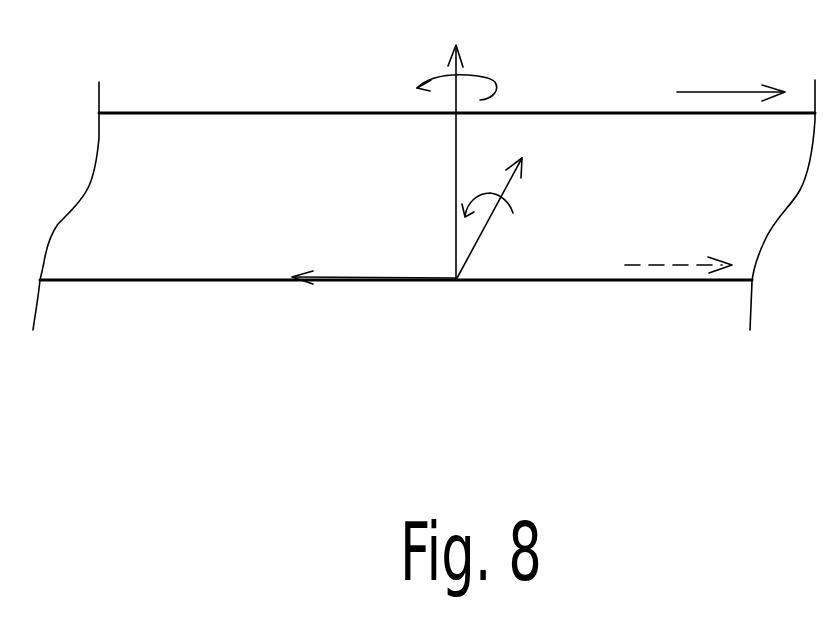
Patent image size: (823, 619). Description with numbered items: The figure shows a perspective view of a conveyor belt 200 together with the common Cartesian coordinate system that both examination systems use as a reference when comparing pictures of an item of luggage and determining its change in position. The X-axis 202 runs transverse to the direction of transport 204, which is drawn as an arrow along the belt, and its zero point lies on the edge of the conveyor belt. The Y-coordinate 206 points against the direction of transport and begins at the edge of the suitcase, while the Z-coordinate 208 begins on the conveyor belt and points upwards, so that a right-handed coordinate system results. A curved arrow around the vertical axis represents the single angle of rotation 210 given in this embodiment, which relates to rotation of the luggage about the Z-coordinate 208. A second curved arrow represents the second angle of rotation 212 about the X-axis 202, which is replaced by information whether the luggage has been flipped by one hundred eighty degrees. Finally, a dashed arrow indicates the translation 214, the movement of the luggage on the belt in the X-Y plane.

The conveyor belt 200 is at (115, 282).
The X-axis 202 is at (477, 249).
The direction of transport 204 is at (737, 90).
The Y-coordinate 206 is at (437, 277).
The Z-coordinate 208 is at (455, 164).
The angle of rotation 210 is at (494, 79).
The second angle of rotation 212 is at (526, 203).
The translation 214 is at (692, 262).